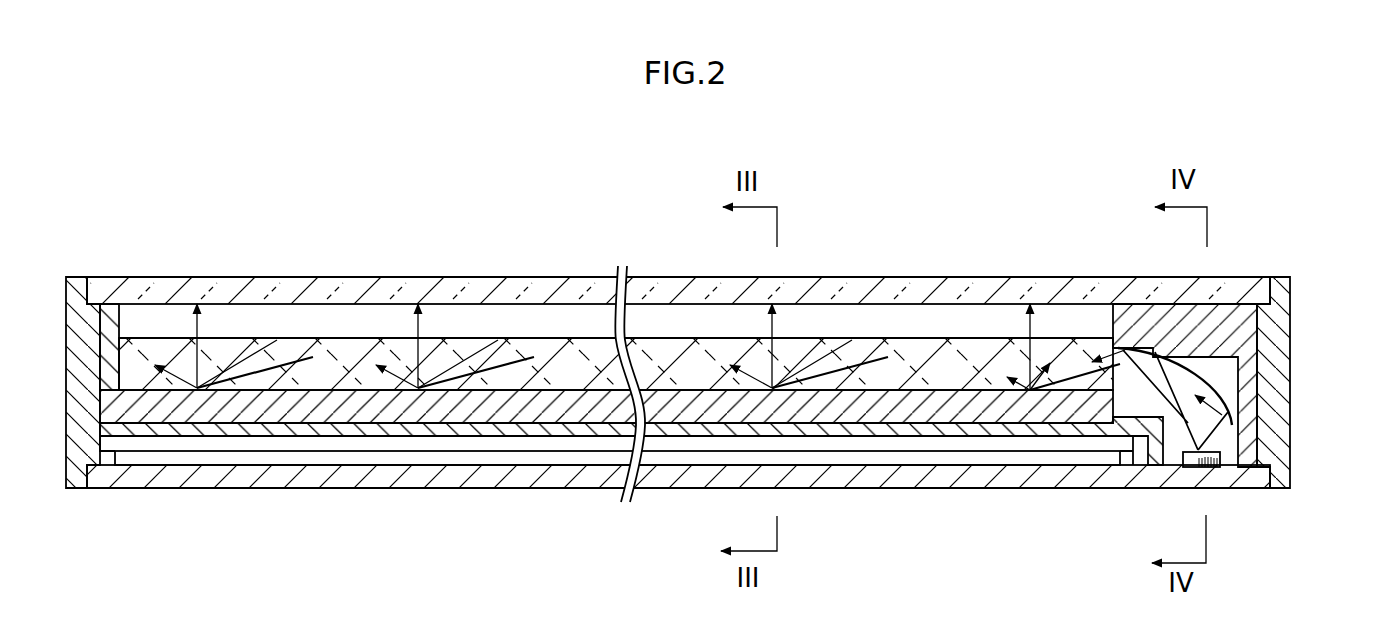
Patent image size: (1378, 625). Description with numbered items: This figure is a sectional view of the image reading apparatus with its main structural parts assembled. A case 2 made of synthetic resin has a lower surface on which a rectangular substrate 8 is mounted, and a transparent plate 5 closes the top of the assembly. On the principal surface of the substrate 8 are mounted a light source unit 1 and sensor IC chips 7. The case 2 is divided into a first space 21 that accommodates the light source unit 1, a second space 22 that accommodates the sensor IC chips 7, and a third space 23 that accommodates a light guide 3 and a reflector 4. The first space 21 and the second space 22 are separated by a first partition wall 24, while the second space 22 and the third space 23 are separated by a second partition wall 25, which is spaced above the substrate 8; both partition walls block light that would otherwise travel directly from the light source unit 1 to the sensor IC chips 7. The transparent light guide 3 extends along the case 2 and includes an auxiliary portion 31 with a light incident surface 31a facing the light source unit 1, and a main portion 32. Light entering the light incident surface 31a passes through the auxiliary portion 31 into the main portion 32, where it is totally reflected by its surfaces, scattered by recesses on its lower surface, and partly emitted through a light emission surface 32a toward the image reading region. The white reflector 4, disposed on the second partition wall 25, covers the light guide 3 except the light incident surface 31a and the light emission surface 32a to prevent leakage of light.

The light source unit 1 is at (1212, 472).
The case 2 is at (1278, 352).
The light guide 3 is at (1002, 336).
The reflector 4 is at (1145, 322).
The transparent plate 5 is at (1230, 290).
The sensor IC chips 7 is at (983, 460).
The substrate 8 is at (512, 478).
The first space 21 is at (1228, 448).
The second space 22 is at (365, 440).
The third space 23 is at (857, 320).
The first partition wall 24 is at (1142, 460).
The second partition wall 25 is at (898, 438).
The auxiliary portion 31 is at (1203, 386).
The light incident surface 31a is at (1222, 430).
The main portion 32 is at (687, 342).
The light emission surface 32a is at (942, 336).